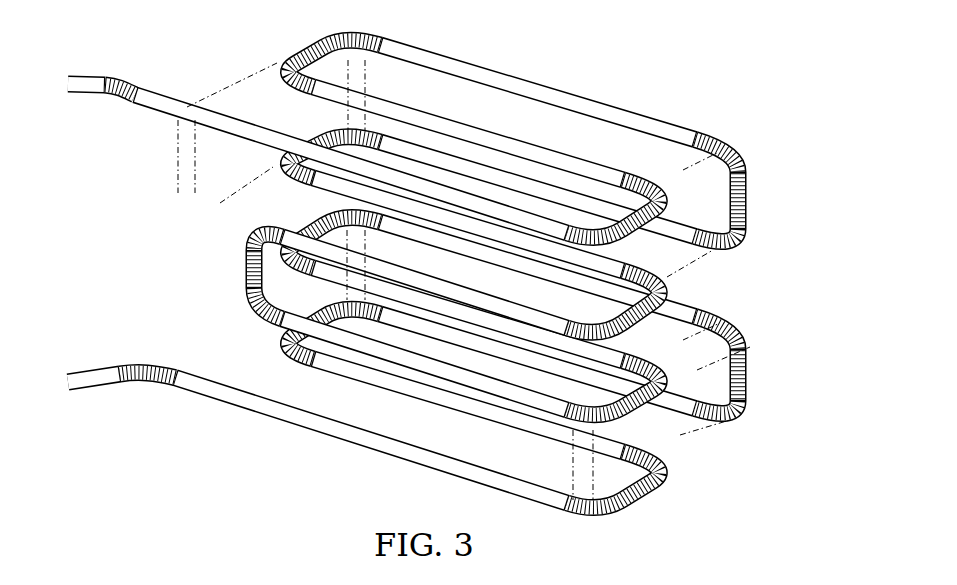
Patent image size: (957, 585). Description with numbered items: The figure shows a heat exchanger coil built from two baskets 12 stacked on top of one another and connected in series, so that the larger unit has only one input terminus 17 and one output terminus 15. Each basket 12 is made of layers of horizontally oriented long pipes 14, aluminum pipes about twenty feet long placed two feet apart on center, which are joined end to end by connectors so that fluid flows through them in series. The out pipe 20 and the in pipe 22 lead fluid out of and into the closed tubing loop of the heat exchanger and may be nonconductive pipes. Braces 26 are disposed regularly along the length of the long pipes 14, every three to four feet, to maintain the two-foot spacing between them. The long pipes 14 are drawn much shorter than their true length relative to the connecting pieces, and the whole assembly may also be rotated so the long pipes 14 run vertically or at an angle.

The basket 12 is at (766, 133).
The long pipe 14 is at (572, 93).
The output terminus 15 is at (92, 78).
The input terminus 17 is at (240, 265).
The out pipe 20 is at (163, 100).
The in pipe 22 is at (92, 392).
The brace 26 is at (572, 480).